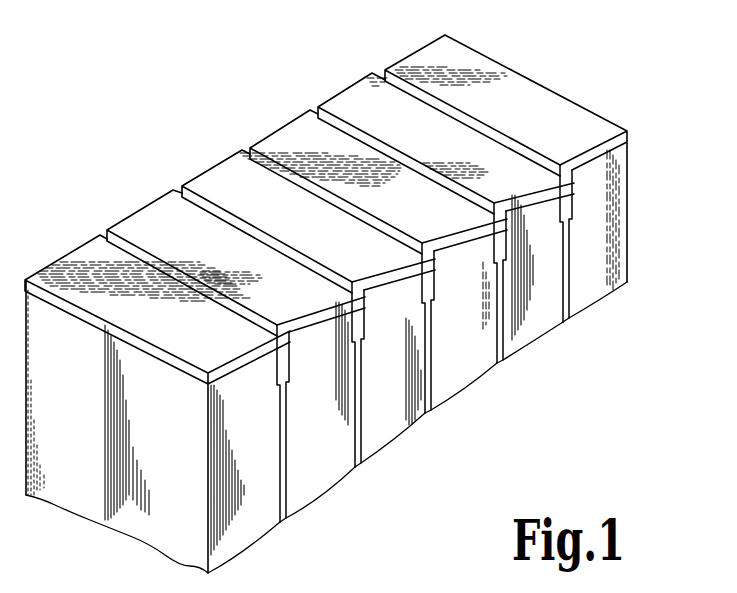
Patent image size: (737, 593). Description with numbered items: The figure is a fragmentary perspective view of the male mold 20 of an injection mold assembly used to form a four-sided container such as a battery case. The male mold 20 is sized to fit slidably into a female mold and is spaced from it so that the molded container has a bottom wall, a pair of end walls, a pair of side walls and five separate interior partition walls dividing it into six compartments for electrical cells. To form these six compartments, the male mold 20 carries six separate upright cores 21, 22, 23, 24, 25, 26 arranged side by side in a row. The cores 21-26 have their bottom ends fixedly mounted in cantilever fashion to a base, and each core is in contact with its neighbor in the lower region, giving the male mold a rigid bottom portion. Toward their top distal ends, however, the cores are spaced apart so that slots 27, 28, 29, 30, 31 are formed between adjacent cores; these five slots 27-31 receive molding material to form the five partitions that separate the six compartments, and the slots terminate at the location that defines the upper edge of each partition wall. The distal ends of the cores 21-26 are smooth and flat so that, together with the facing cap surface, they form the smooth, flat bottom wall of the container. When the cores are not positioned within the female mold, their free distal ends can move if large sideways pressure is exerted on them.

The male mold 20 is at (368, 295).
The core 21 is at (68, 255).
The core 22 is at (152, 208).
The core 23 is at (222, 170).
The core 24 is at (282, 133).
The core 25 is at (350, 96).
The core 26 is at (420, 53).
The slot 27 is at (288, 510).
The slot 28 is at (365, 456).
The slot 29 is at (428, 412).
The slot 30 is at (500, 364).
The slot 31 is at (570, 318).